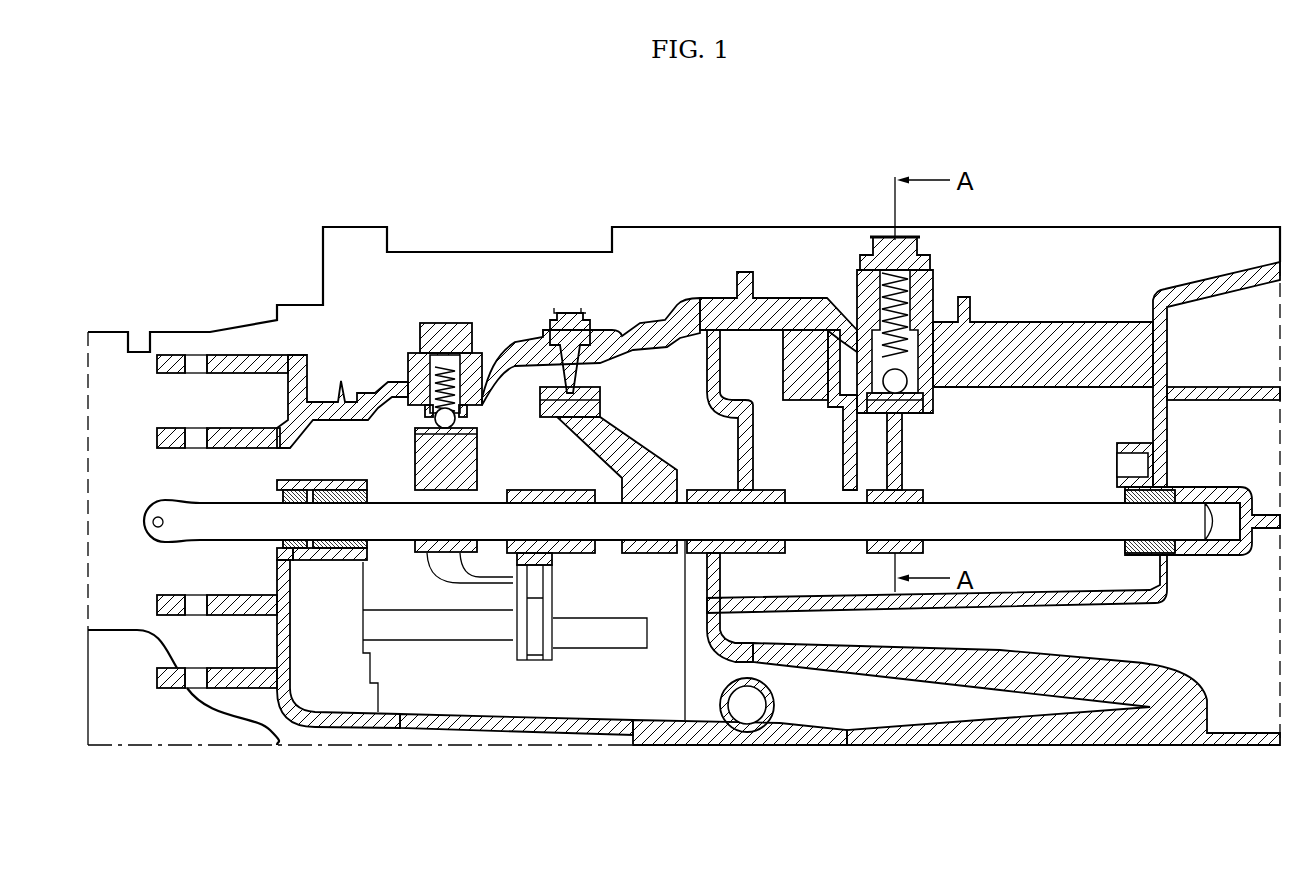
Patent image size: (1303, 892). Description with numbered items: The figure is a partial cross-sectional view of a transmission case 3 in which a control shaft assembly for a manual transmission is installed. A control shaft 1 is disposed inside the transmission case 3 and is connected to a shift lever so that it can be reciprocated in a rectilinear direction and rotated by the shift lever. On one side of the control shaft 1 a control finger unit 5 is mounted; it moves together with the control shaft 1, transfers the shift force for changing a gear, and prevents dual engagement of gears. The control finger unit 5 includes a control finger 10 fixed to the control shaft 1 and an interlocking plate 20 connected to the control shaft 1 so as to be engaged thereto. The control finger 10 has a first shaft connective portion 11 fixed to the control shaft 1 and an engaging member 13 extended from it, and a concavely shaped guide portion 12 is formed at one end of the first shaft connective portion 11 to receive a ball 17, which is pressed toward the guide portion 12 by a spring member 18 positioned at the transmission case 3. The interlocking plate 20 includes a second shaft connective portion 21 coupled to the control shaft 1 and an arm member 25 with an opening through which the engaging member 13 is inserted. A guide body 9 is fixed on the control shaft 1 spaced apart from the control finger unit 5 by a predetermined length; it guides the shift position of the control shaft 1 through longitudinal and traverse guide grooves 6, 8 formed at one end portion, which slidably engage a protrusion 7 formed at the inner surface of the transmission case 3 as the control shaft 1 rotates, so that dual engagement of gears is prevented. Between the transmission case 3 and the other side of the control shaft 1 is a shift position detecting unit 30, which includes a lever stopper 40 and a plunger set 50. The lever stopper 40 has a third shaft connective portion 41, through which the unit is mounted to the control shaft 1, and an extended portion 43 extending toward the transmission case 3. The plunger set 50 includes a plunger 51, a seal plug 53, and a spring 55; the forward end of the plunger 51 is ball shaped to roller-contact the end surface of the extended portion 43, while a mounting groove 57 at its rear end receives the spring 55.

The control shaft 1 is at (218, 518).
The transmission case 3 is at (345, 713).
The control finger unit 5 is at (503, 477).
The longitudinal guide groove 6 is at (537, 390).
The protrusion 7 is at (566, 375).
The traverse guide groove 8 is at (577, 333).
The guide body 9 is at (588, 413).
The control finger 10 is at (505, 700).
The first shaft connective portion 11 is at (457, 547).
The guide portion 12 is at (342, 414).
The engaging member 13 is at (488, 597).
The ball 17 is at (410, 457).
The spring member 18 is at (438, 365).
The interlocking plate 20 is at (596, 639).
The second shaft connective portion 21 is at (582, 552).
The arm member 25 is at (543, 647).
The shift position detecting unit 30 is at (946, 444).
The lever stopper 40 is at (867, 629).
The third shaft connective portion 41 is at (895, 553).
The extended portion 43 is at (893, 443).
The plunger set 50 is at (897, 259).
The plunger 51 is at (860, 348).
The seal plug 53 is at (888, 237).
The spring 55 is at (880, 350).
The mounting groove 57 is at (907, 332).